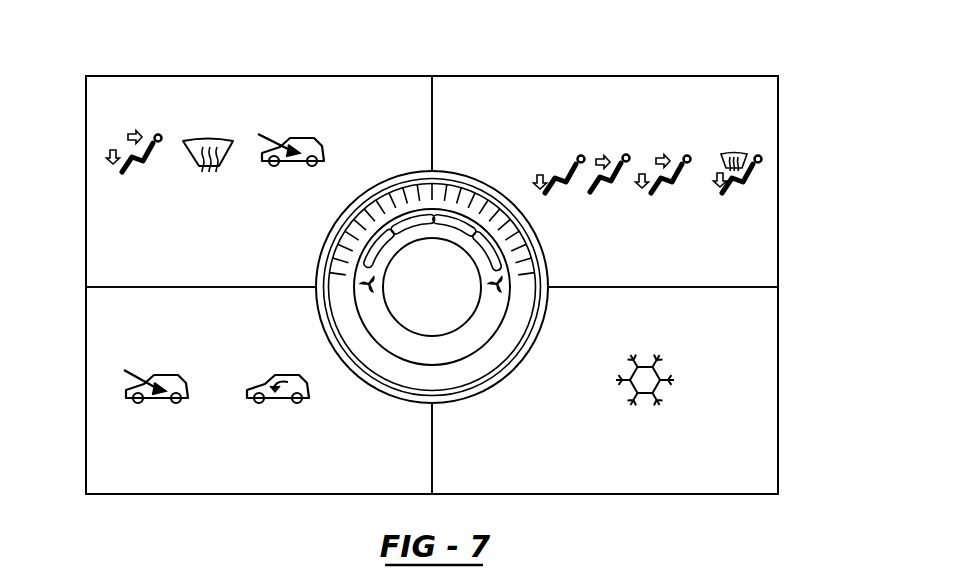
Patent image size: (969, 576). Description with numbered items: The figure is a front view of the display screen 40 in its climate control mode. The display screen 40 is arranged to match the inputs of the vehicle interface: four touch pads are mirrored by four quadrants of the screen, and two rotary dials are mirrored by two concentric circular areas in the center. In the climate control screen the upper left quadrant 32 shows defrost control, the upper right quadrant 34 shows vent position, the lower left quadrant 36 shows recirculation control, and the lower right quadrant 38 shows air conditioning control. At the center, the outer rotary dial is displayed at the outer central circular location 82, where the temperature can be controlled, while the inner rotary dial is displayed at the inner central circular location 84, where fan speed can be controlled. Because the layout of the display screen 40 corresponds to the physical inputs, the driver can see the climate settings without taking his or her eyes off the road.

The display screen 40 is at (468, 281).
The upper left quadrant 32 is at (340, 110).
The upper right quadrant 34 is at (580, 105).
The lower left quadrant 36 is at (220, 468).
The lower right quadrant 38 is at (742, 438).
The outer central circular location 82 is at (382, 363).
The inner central circular location 84 is at (485, 342).